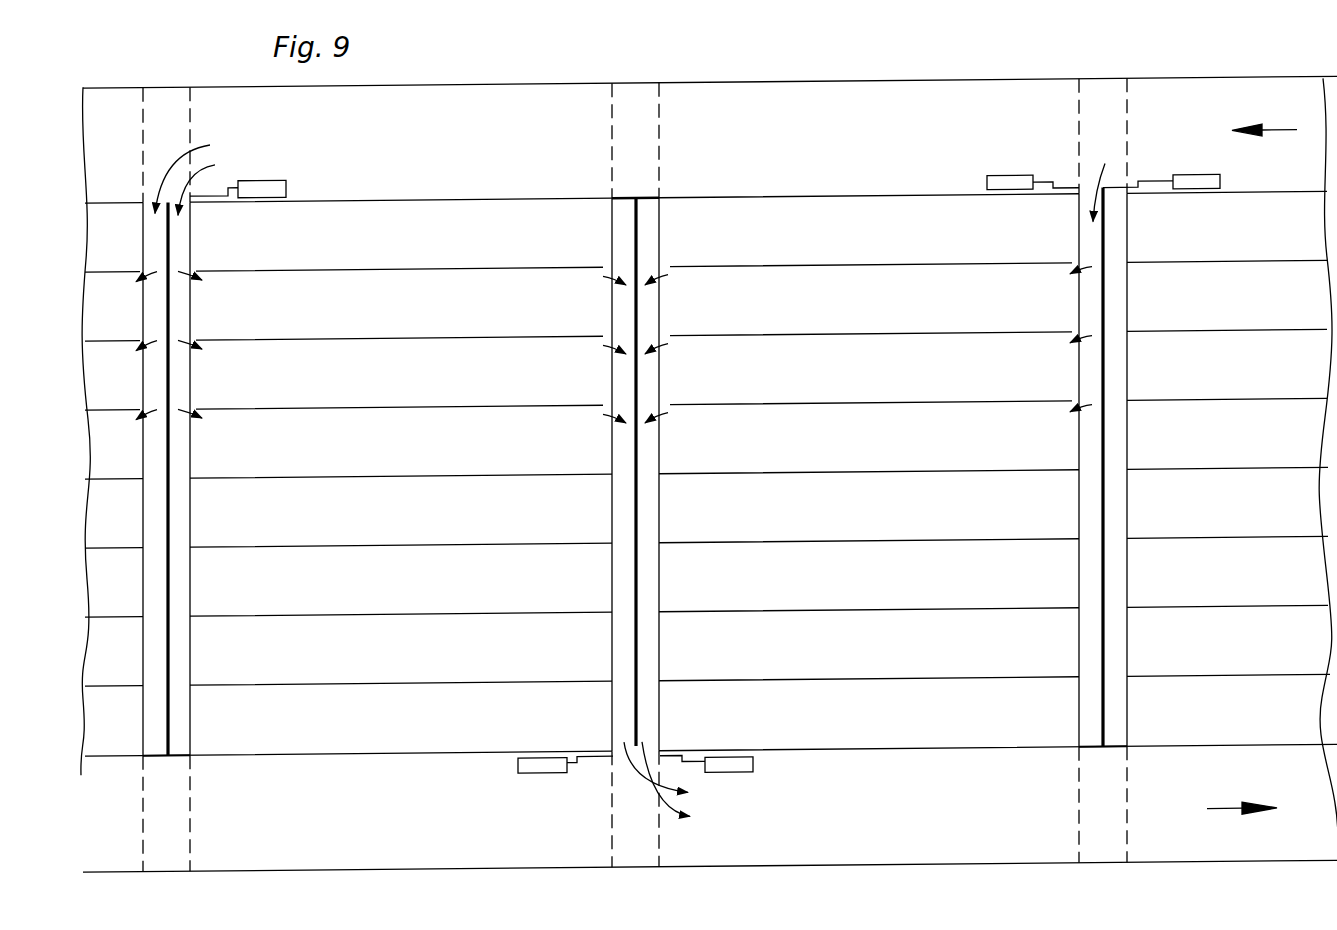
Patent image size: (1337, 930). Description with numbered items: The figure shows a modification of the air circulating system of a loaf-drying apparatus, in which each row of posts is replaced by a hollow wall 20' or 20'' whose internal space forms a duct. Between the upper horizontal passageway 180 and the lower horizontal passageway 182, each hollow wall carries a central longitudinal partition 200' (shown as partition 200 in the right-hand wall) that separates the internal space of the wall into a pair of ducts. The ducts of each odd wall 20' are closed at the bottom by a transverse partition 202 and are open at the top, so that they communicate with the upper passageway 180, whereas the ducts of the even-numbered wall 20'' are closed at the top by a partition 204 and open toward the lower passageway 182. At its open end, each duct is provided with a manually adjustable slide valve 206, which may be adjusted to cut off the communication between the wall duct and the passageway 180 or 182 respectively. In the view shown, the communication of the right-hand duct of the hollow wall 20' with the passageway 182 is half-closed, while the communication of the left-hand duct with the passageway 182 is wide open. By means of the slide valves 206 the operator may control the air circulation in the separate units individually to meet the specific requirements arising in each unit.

The horizontal passageway 180 is at (829, 92).
The horizontal passageway 182 is at (883, 854).
The hollow wall 20' is at (655, 474).
The hollow wall 20'' is at (676, 475).
The longitudinal partition 200 is at (1150, 467).
The central longitudinal partition 200' is at (451, 476).
The transverse partition 202 is at (177, 757).
The partition 204 is at (625, 197).
The slide valve 206 is at (582, 753).